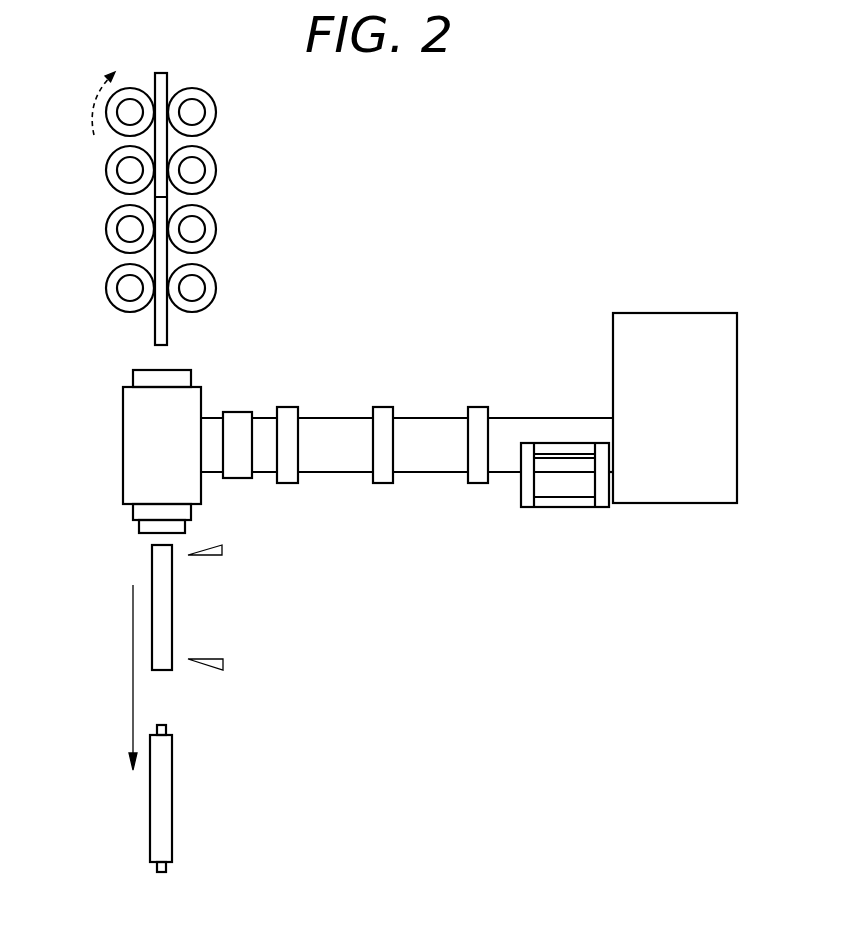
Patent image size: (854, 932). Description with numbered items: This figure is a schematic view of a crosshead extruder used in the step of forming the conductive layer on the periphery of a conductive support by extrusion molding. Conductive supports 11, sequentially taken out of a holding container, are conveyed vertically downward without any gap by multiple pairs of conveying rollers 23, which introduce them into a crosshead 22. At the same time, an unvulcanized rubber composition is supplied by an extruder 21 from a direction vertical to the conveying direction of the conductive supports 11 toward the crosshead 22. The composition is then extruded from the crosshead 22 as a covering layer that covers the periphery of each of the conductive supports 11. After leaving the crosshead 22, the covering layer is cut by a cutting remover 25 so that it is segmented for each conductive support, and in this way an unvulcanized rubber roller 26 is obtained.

The conductive support 11 is at (158, 325).
The extruder 21 is at (433, 427).
The crosshead 22 is at (130, 428).
The conveying rollers 23 is at (112, 164).
The cutting remover 25 is at (222, 547).
The unvulcanized rubber roller 26 is at (167, 806).